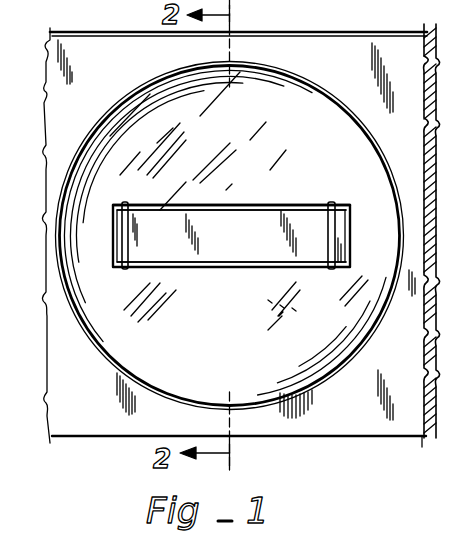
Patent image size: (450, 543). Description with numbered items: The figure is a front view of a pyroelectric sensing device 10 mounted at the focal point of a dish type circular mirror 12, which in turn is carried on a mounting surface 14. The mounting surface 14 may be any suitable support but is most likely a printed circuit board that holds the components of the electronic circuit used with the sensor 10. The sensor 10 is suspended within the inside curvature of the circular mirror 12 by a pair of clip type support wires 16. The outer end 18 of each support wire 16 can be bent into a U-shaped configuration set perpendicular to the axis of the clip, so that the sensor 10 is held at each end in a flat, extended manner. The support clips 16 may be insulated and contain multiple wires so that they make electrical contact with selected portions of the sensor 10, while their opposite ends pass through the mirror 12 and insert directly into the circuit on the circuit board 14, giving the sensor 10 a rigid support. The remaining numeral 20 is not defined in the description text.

The pyroelectric sensing device 10 is at (255, 198).
The circular mirror 12 is at (132, 93).
The mounting surface 14 is at (349, 46).
The clip type support wires 16 is at (130, 254).
The outer end 18 is at (135, 205).
The slot interior 20 is at (254, 250).